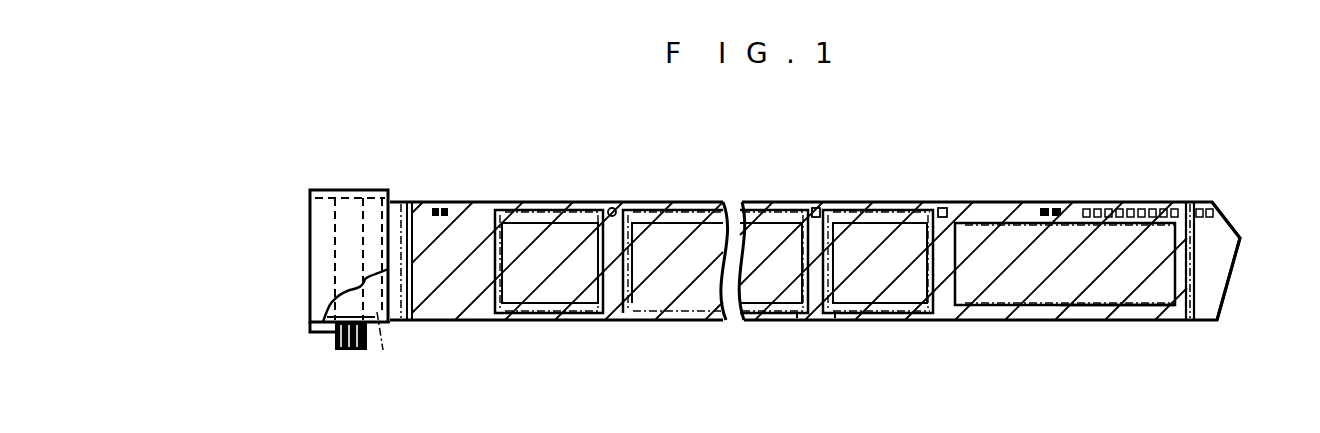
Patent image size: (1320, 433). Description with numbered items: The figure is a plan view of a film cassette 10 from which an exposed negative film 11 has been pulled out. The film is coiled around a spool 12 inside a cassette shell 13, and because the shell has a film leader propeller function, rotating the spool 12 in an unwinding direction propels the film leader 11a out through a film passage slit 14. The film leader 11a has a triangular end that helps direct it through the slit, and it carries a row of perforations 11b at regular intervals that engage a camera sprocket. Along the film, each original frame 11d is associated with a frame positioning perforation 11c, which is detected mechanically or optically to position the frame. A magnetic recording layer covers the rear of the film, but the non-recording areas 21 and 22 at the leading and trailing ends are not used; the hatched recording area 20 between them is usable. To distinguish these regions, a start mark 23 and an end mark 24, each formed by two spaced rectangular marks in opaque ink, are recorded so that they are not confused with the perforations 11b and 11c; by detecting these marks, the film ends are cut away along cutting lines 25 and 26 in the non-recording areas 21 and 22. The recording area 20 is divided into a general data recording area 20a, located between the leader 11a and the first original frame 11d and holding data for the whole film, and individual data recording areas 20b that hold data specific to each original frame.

The film cassette 10 is at (309, 221).
The exposed negative film 11 is at (605, 199).
The film leader 11a is at (1223, 282).
The perforations 11b is at (1154, 210).
The frame positioning perforation 11c is at (618, 208).
The original frame 11d is at (690, 307).
The spool 12 is at (337, 338).
The cassette shell 13 is at (310, 273).
The film passage slit 14 is at (395, 347).
The recording area 20 is at (993, 305).
The general data recording area 20a is at (1073, 311).
The individual data recording areas 20b is at (839, 319).
The non-recording area 21 is at (1204, 317).
The non-recording area 22 is at (403, 313).
The start mark 23 is at (1054, 200).
The end mark 24 is at (437, 201).
The cutting line 25 is at (1199, 257).
The cutting line 26 is at (404, 211).